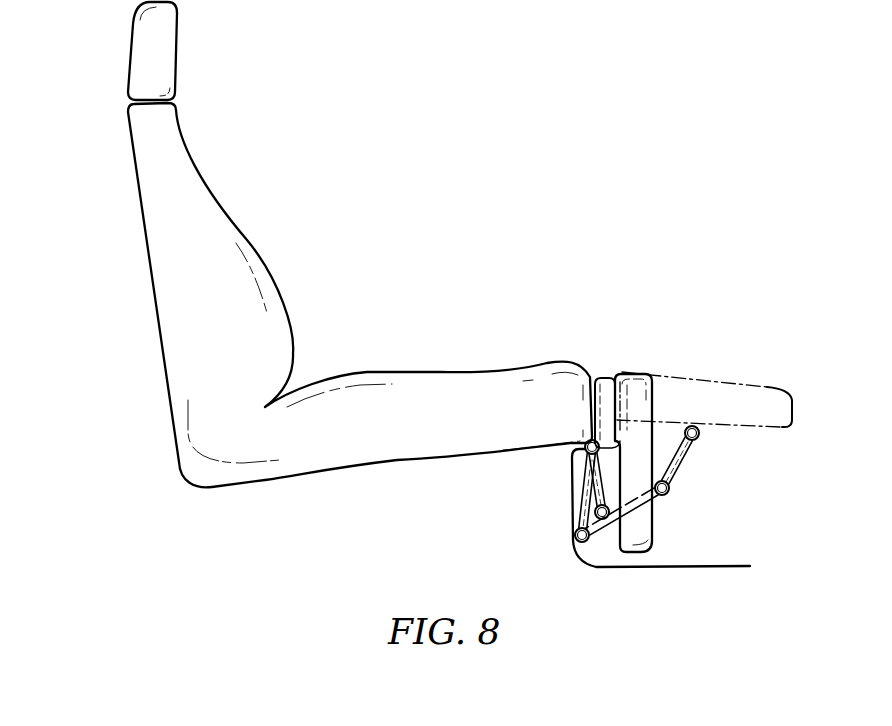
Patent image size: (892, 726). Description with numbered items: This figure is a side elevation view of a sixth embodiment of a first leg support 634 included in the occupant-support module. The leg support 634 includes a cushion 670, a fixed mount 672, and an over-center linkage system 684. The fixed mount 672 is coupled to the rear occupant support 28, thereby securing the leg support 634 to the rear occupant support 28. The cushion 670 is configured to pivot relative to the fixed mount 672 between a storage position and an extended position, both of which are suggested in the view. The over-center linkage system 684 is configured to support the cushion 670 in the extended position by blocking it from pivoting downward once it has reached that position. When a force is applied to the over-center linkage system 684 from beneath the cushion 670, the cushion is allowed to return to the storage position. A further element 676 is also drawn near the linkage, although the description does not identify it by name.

The rear occupant support 28 is at (97, 161).
The leg support 634 is at (693, 347).
The cushion 670 is at (746, 397).
The fixed mount 672 is at (614, 451).
The support bracket 676 is at (576, 554).
The over-center linkage system 684 is at (681, 494).